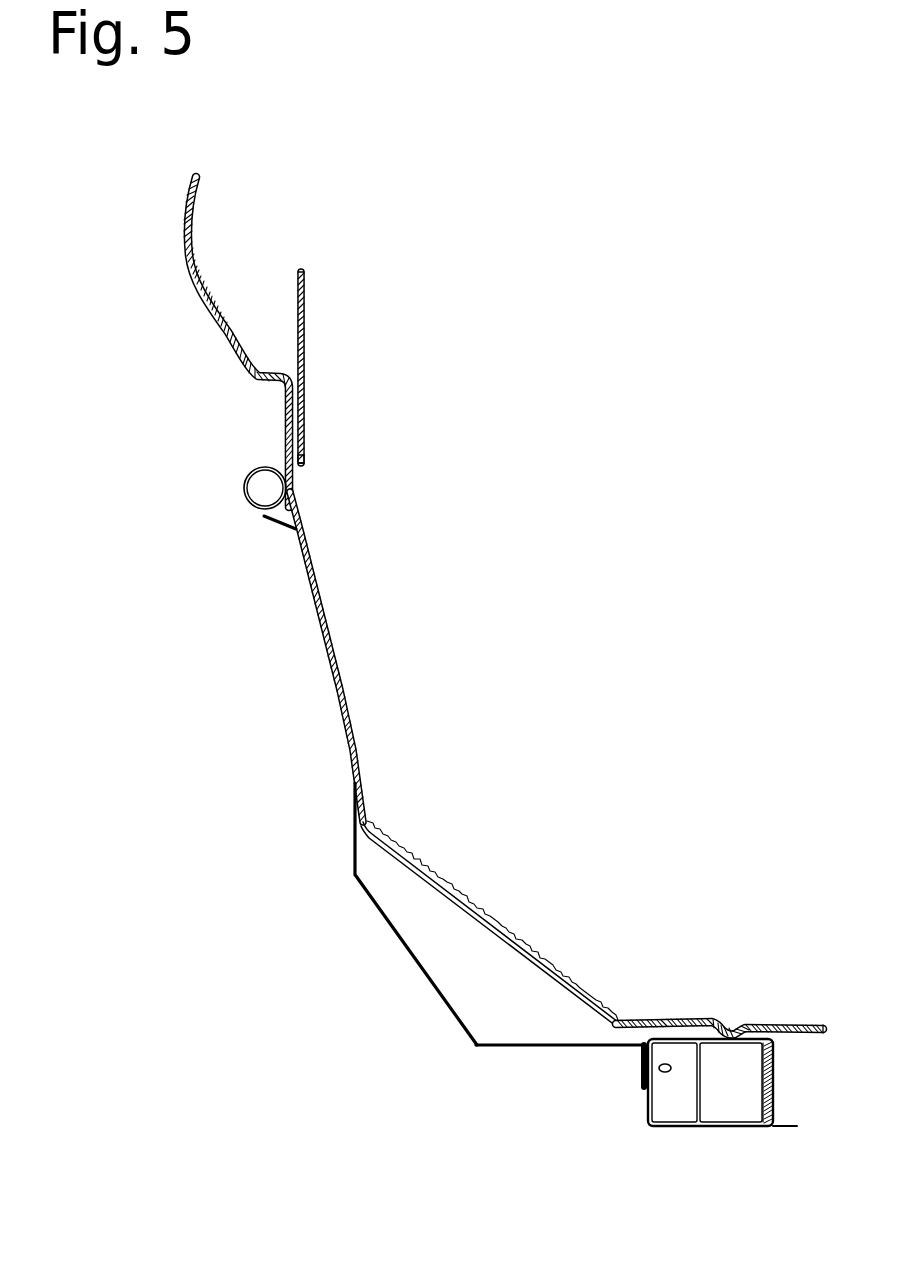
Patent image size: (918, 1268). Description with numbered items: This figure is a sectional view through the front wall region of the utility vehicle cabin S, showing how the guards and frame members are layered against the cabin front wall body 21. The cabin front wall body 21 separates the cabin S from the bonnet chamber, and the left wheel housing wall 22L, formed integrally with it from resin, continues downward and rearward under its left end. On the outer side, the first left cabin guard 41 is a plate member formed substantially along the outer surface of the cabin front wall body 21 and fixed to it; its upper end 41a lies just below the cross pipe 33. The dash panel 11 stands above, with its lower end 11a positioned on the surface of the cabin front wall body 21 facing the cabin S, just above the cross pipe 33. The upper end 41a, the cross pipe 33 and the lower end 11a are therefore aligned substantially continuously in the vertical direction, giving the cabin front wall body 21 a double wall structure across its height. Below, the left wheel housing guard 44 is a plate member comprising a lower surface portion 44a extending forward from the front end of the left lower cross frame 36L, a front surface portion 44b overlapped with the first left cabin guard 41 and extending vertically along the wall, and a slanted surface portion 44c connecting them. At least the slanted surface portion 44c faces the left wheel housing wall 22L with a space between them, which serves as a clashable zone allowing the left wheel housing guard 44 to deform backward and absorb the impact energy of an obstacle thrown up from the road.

The dash panel 11 is at (307, 320).
The lower end 11a is at (298, 468).
The cabin front wall body 21 is at (197, 286).
The left wheel housing wall 22L is at (470, 903).
The cross pipe 33 is at (247, 478).
The left lower cross frame 36L is at (647, 1103).
The first left cabin guard 41 is at (320, 617).
The upper end 41a is at (265, 517).
The left wheel housing guard 44 is at (437, 957).
The lower surface portion 44a is at (557, 1047).
The front surface portion 44b is at (353, 837).
The slanted surface portion 44c is at (407, 943).
The cabin S is at (538, 670).